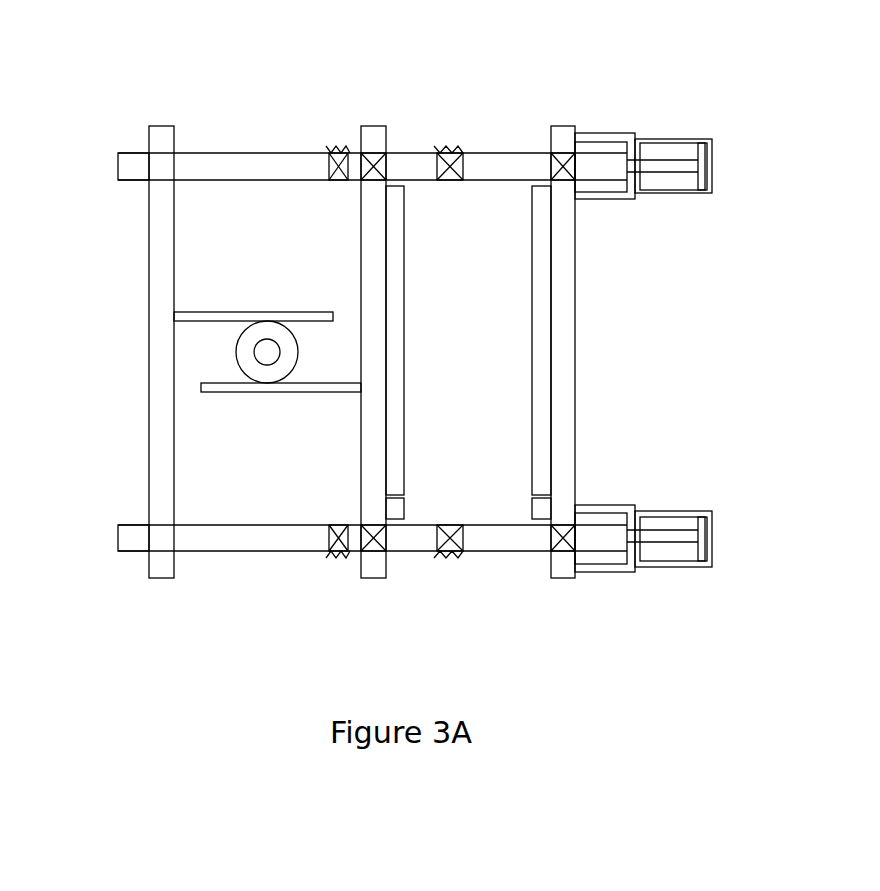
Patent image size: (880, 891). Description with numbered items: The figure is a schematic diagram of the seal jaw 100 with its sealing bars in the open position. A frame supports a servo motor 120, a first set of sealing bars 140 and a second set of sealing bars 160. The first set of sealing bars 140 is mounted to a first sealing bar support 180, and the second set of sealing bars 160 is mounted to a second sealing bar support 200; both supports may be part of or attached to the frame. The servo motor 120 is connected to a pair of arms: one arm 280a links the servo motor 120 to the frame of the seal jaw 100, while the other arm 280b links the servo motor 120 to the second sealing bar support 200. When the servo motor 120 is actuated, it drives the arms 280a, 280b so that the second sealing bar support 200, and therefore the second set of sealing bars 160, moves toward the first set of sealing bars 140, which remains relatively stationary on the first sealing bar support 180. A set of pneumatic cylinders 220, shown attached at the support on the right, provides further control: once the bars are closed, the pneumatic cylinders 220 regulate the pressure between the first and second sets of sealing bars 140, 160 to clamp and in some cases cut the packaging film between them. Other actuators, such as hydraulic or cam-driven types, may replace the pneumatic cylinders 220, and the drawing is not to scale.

The seal jaw 100 is at (203, 80).
The servo motor 120 is at (262, 350).
The first set of sealing bars 140 is at (540, 421).
The second set of sealing bars 160 is at (393, 467).
The first sealing bar support 180 is at (562, 366).
The second sealing bar support 200 is at (371, 414).
The pneumatic cylinders 220 is at (680, 193).
The arm 280a is at (232, 312).
The arm 280b is at (222, 383).